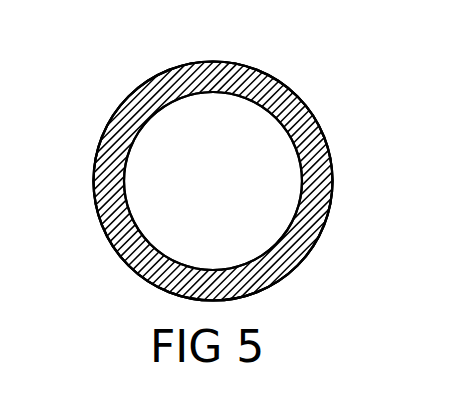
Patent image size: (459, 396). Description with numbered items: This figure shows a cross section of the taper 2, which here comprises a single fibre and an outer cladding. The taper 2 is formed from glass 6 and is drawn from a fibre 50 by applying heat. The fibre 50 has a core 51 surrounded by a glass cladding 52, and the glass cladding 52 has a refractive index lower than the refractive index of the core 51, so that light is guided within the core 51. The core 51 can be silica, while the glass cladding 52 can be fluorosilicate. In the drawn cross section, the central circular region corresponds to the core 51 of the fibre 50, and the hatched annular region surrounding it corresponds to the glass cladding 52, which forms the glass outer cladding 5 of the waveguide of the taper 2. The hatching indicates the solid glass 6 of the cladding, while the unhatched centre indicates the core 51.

The taper 2 is at (148, 82).
The glass outer cladding 5 is at (258, 73).
The glass 6 is at (247, 221).
The fibre 50 is at (123, 265).
The core 51 is at (208, 92).
The glass cladding 52 is at (295, 95).